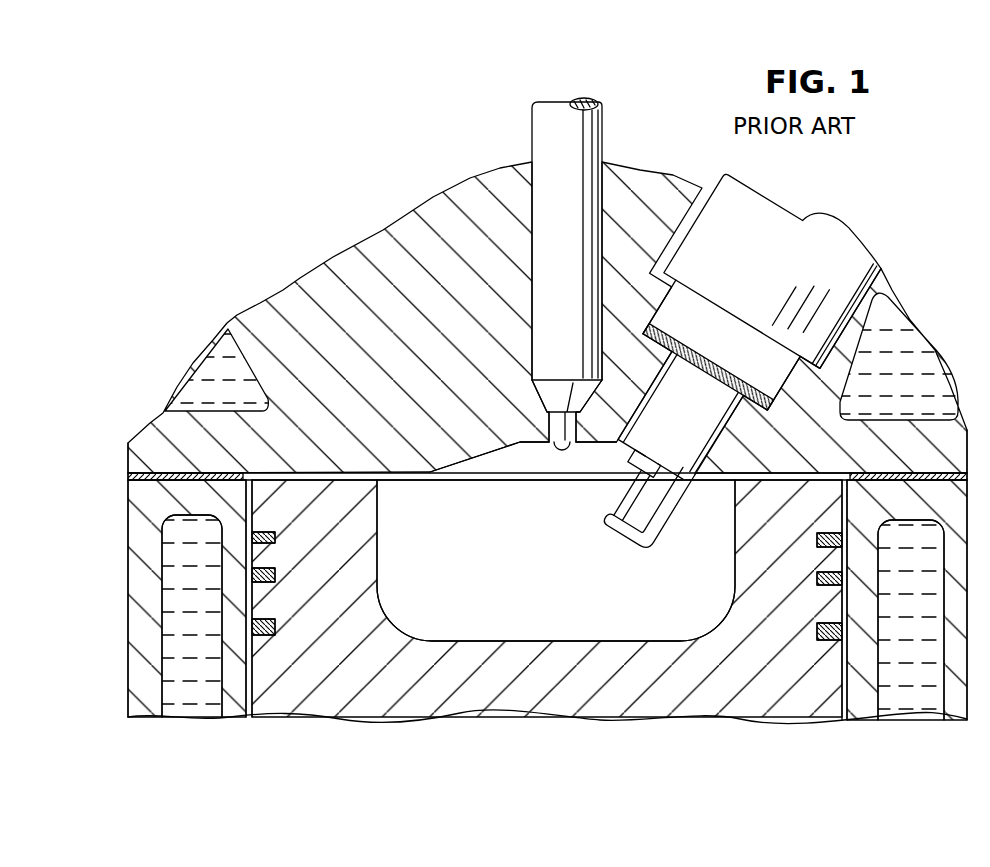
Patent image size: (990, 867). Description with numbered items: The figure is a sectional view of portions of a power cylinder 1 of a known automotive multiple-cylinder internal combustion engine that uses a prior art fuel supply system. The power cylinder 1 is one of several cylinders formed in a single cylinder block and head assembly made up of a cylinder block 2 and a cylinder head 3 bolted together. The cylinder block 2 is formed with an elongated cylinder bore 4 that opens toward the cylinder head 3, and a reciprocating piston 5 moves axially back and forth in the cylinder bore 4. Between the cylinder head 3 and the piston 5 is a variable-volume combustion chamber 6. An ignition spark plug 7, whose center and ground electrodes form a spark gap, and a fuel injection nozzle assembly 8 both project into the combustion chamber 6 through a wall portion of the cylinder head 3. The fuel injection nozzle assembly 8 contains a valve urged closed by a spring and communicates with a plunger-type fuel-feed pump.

The power cylinder 1 is at (302, 258).
The cylinder block 2 is at (127, 538).
The cylinder head 3 is at (128, 446).
The cylinder bore 4 is at (255, 713).
The reciprocating piston 5 is at (556, 686).
The combustion chamber 6 is at (480, 462).
The ignition spark plug 7 is at (881, 268).
The fuel injection nozzle assembly 8 is at (603, 139).